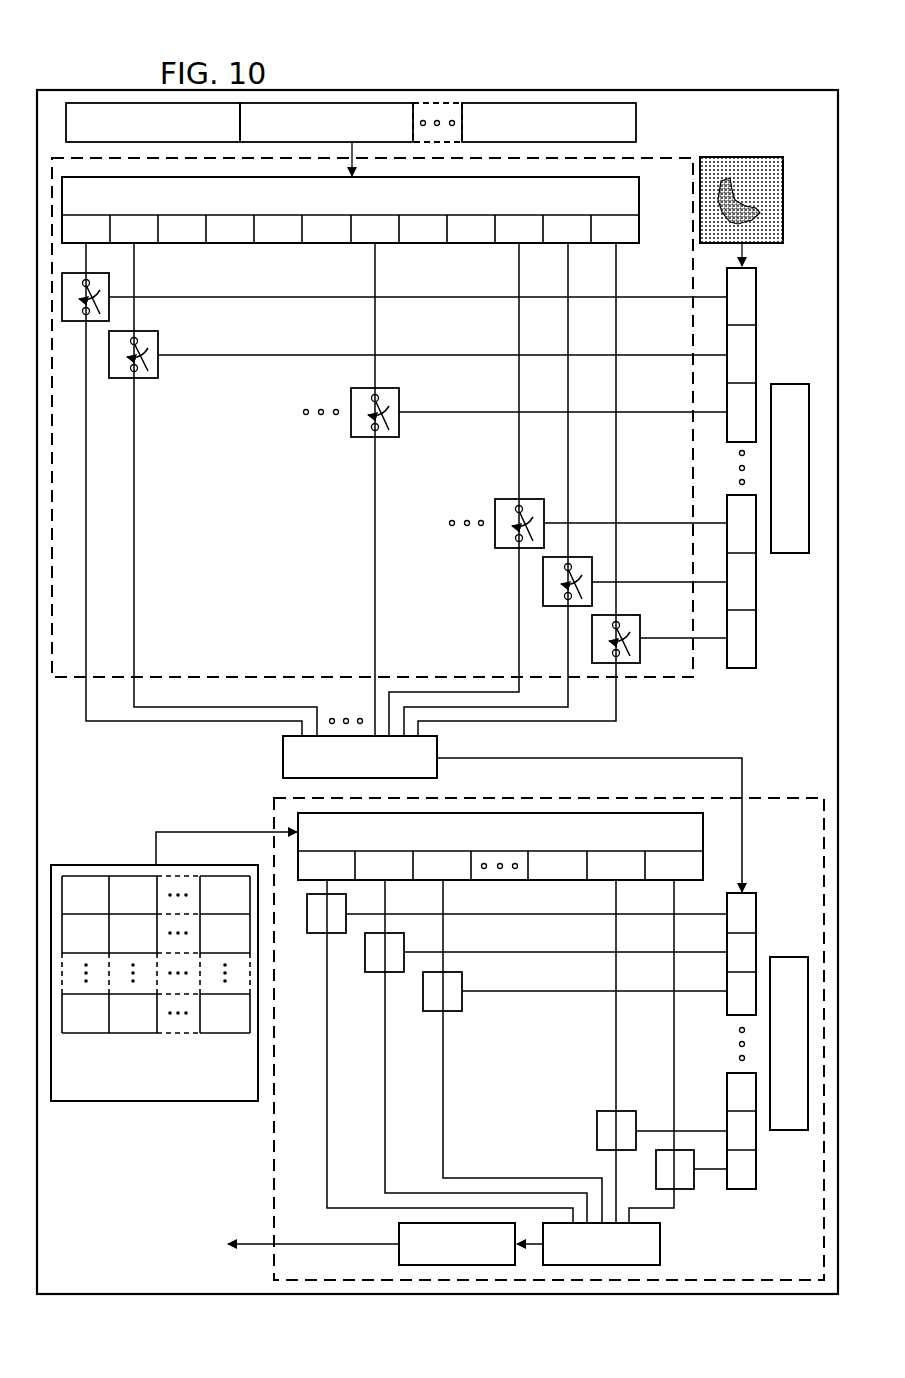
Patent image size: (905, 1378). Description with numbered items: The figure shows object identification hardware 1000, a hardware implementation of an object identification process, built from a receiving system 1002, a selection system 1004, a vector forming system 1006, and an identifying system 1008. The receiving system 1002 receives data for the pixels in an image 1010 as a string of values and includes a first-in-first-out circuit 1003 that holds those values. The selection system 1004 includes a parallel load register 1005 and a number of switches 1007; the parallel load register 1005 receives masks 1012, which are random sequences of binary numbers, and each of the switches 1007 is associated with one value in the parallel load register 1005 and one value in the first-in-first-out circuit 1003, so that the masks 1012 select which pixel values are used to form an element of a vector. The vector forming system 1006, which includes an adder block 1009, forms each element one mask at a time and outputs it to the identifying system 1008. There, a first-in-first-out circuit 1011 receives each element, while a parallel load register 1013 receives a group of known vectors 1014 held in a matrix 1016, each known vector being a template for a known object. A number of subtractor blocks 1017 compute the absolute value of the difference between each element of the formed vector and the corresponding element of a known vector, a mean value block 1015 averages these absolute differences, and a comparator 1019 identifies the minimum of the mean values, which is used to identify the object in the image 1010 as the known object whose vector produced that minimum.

The object identification hardware 1000 is at (662, 88).
The receiving system 1002 is at (784, 309).
The first-in-first-out circuit 1003 is at (791, 383).
The selection system 1004 is at (661, 679).
The parallel load register 1005 is at (639, 195).
The vector forming system 1006 is at (437, 750).
The number of switches 1007 is at (135, 378).
The identifying system 1008 is at (271, 1153).
The adder block 1009 is at (283, 750).
The image 1010 is at (755, 156).
The first-in-first-out circuit 1011 is at (788, 957).
The masks 1012 is at (643, 120).
The parallel load register 1013 is at (505, 812).
The group of known vectors 1014 is at (215, 1031).
The mean value block 1015 is at (660, 1250).
The matrix 1016 is at (131, 1040).
The number of subtractor blocks 1017 is at (474, 1032).
The comparator 1019 is at (399, 1250).